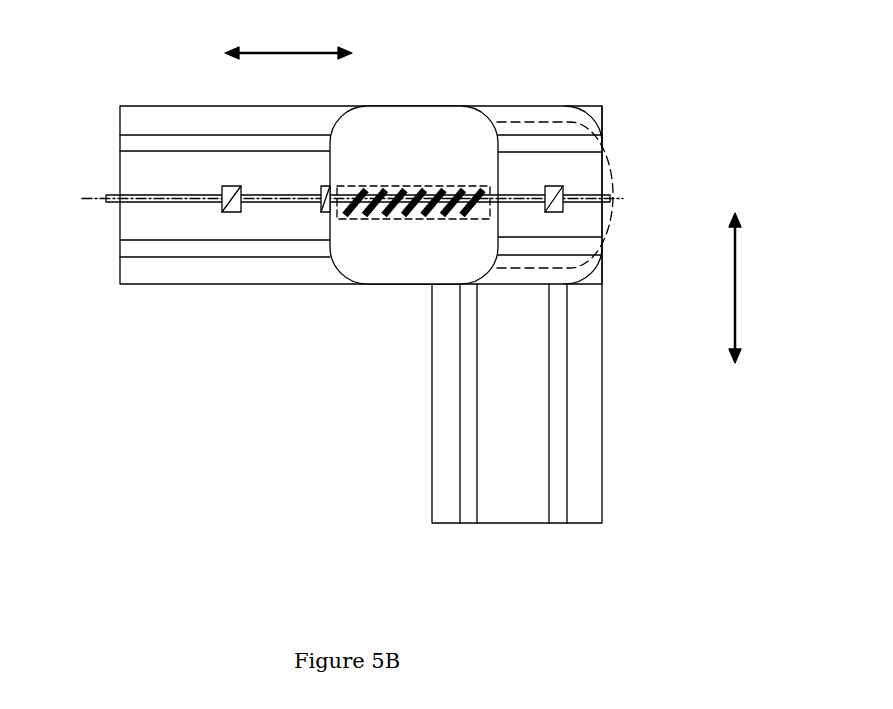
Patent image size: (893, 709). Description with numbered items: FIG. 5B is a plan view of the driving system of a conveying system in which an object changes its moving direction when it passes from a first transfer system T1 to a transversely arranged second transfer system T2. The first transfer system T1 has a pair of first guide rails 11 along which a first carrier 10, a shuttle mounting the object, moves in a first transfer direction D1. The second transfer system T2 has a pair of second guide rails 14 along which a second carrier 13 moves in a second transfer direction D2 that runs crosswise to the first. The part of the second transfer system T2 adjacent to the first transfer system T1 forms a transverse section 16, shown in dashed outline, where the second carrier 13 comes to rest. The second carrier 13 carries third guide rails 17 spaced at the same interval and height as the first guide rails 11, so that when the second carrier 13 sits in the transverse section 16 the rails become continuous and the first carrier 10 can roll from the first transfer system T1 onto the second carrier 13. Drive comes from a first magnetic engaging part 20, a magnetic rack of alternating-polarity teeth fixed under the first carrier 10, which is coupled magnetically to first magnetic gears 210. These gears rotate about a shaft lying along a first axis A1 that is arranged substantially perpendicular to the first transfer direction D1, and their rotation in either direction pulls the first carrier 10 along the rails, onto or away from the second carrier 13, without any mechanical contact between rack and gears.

The first carrier 10 is at (367, 122).
The first guide rails 11 is at (137, 145).
The second carrier 13 is at (573, 285).
The second guide rails 14 is at (472, 497).
The transverse section 16 is at (528, 122).
The third guide rails 17 is at (560, 142).
The first magnetic engaging part 20 is at (398, 185).
The first magnetic gear 210 is at (222, 212).
The first axis A1 is at (217, 197).
The first transfer direction D1 is at (288, 32).
The second transfer direction D2 is at (752, 288).
The first transfer system T1 is at (147, 270).
The second transfer system T2 is at (583, 502).